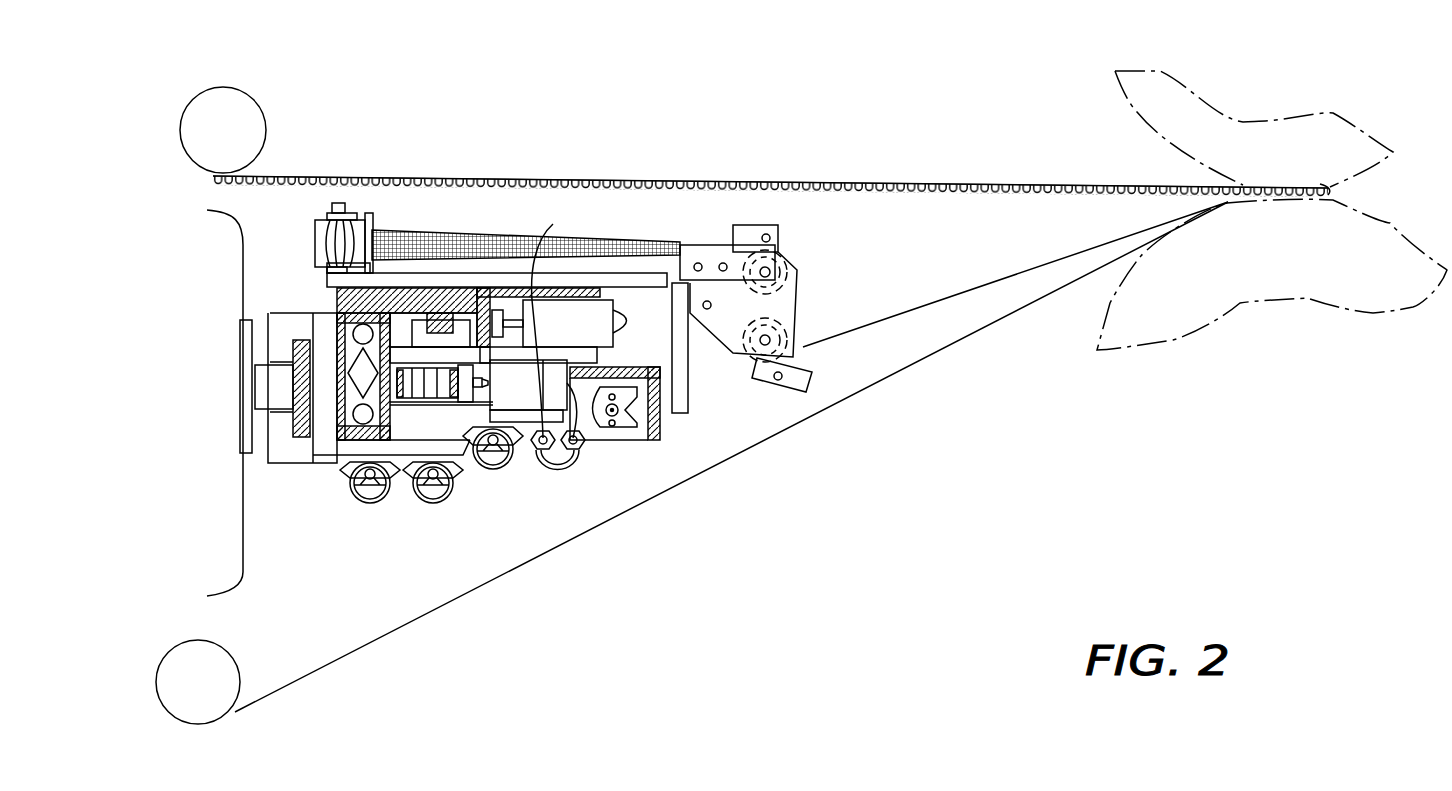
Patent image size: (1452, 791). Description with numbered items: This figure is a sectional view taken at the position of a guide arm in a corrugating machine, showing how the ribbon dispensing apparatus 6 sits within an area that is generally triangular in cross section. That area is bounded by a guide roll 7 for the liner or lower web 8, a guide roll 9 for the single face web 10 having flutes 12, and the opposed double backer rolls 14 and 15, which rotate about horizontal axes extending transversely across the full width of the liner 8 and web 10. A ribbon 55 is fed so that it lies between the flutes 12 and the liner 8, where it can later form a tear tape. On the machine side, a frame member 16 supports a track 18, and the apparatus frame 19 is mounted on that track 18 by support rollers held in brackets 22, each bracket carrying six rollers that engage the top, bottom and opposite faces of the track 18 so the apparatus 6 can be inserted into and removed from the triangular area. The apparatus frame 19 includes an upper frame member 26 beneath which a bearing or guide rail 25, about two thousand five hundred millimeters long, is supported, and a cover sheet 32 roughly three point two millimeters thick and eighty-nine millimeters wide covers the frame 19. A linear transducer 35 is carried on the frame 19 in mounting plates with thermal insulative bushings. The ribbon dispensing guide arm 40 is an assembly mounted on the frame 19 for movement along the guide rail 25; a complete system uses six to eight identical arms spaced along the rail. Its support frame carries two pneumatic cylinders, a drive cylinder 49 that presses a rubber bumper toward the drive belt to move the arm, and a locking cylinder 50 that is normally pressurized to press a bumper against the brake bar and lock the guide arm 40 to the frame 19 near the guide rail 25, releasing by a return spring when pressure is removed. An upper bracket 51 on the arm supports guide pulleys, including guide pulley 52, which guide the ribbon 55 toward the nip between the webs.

The ribbon dispensing apparatus 6 is at (408, 530).
The guide roll 7 is at (232, 652).
The liner or lower web 8 is at (370, 638).
The guide roll 9 is at (267, 128).
The single face web 10 is at (675, 178).
The flutes 12 is at (925, 188).
The double backer roll 14 is at (1137, 110).
The double backer roll 15 is at (1105, 320).
The frame member 16 is at (207, 596).
The track 18 is at (303, 430).
The apparatus frame 19 is at (333, 297).
The brackets 22 is at (310, 465).
The guide rail 25 is at (440, 322).
The upper frame member 26 is at (385, 298).
The cover sheet 32 is at (564, 322).
The linear transducer 35 is at (618, 410).
The ribbon dispensing guide arm 40 is at (800, 250).
The drive cylinder 49 is at (524, 402).
The locking cylinder 50 is at (553, 331).
The upper bracket 51 is at (617, 270).
The guide pulley 52 is at (315, 235).
The ribbon 55 is at (917, 308).